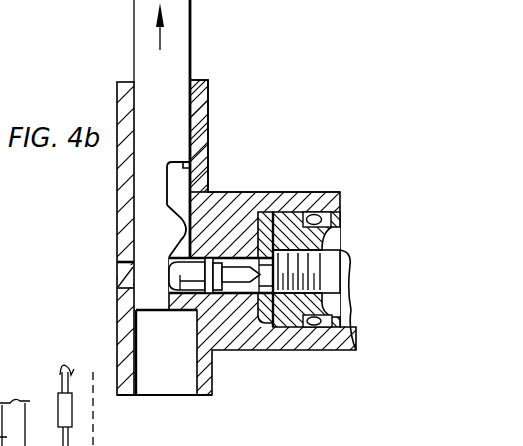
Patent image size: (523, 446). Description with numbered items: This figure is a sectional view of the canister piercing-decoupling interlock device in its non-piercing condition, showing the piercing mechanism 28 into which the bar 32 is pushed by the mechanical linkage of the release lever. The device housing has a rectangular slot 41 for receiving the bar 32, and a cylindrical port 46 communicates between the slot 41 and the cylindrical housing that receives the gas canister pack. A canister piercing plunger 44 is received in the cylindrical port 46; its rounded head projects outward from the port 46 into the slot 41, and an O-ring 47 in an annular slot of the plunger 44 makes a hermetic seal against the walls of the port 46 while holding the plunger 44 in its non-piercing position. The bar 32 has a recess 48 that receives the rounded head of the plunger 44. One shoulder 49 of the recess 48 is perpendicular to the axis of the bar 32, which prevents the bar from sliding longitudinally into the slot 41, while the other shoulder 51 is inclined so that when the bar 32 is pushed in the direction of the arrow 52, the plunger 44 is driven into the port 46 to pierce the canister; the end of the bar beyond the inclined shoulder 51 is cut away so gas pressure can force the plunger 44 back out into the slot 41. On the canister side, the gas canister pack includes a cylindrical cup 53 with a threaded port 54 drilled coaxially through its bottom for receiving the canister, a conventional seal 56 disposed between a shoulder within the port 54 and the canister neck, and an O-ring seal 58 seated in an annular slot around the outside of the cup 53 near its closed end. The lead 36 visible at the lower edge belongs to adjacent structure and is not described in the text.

The piercing mechanism 28 is at (207, 104).
The bar 32 is at (187, 25).
The lead 36 is at (88, 443).
The rectangular slot 41 is at (192, 384).
The canister piercing plunger 44 is at (183, 294).
The cylindrical port 46 is at (240, 292).
The O-ring 47 is at (206, 295).
The recess 48 is at (180, 191).
The shoulder 49 is at (190, 172).
The inclined shoulder 51 is at (187, 231).
The arrow 52 is at (160, 49).
The cylindrical cup 53 is at (333, 212).
The port 54 is at (308, 297).
The seal 56 is at (232, 192).
The O-ring seal 58 is at (311, 328).